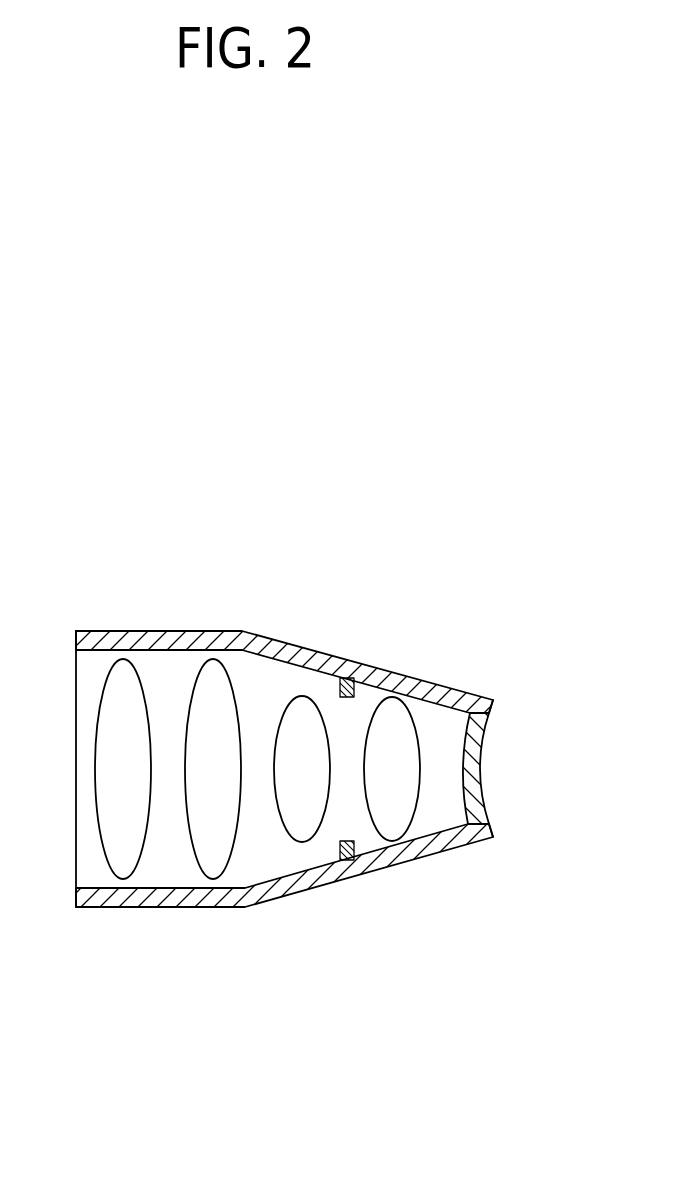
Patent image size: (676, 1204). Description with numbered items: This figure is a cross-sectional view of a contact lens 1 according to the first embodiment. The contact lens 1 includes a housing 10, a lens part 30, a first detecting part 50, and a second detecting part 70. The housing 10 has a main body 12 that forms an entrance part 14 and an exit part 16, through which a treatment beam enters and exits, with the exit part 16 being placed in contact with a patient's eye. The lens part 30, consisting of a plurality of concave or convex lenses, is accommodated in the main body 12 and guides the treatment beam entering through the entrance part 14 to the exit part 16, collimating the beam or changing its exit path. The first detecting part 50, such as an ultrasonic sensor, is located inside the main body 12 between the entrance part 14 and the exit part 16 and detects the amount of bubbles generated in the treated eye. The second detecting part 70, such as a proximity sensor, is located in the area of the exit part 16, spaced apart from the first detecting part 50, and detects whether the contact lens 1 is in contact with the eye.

The contact lens 1 is at (450, 613).
The housing 10 is at (285, 842).
The main body 12 is at (305, 884).
The entrance part 14 is at (76, 861).
The exit part 16 is at (506, 850).
The lens part 30 is at (213, 665).
The first detecting part 50 is at (343, 677).
The second detecting part 70 is at (475, 742).